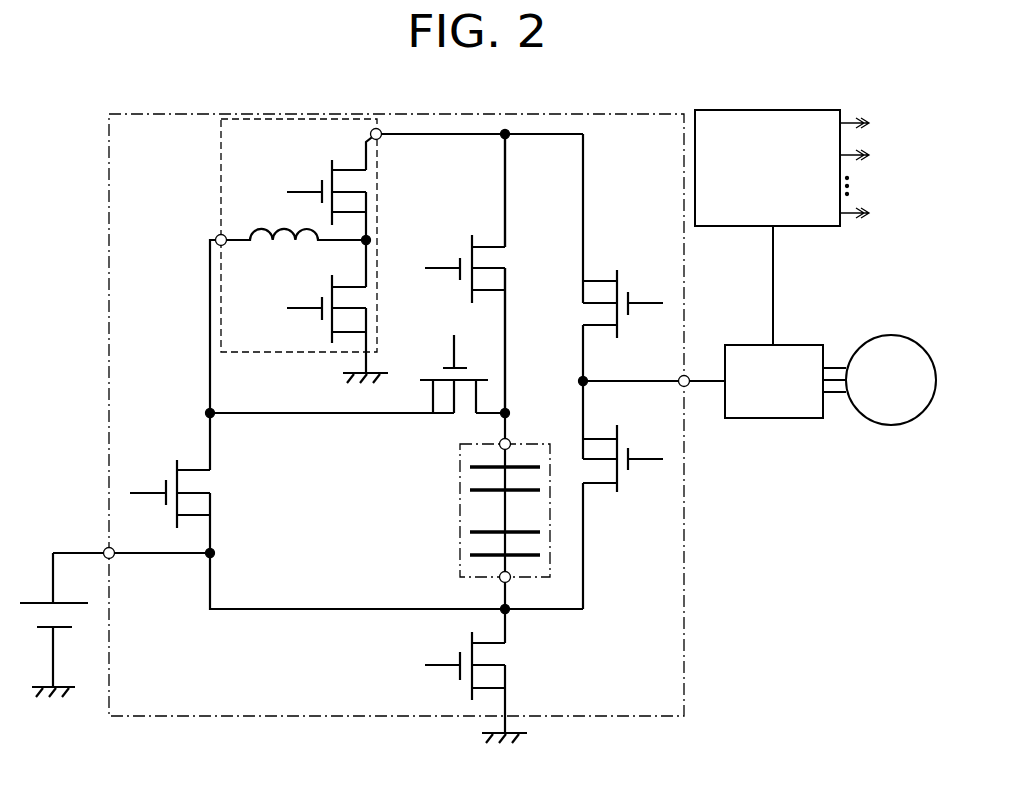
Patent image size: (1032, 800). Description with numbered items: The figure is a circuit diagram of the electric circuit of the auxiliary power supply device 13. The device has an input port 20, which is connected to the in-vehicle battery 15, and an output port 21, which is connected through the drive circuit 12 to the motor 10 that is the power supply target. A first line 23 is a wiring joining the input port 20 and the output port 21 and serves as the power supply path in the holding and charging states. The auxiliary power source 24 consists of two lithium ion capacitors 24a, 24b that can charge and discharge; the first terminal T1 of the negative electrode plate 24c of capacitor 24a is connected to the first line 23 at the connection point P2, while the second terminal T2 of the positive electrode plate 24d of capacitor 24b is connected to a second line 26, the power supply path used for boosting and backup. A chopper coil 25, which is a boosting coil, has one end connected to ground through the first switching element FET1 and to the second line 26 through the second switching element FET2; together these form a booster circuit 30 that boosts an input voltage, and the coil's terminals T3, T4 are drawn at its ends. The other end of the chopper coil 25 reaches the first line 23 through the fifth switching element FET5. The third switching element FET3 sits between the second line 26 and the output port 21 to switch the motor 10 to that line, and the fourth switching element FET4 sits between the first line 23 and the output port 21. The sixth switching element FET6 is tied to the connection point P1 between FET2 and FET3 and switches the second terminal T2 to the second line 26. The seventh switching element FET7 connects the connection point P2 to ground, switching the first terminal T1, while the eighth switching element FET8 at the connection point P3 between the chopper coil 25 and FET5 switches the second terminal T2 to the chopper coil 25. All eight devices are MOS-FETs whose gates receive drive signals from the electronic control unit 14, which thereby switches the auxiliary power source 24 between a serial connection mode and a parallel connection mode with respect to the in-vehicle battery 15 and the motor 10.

The motor 10 is at (885, 336).
The drive circuit 12 is at (800, 343).
The auxiliary power supply device 13 is at (684, 637).
The electronic control unit 14 is at (798, 228).
The in-vehicle battery 15 is at (40, 600).
The input port 20 is at (106, 548).
The output port 21 is at (687, 377).
The first line 23 is at (300, 607).
The auxiliary power source 24 is at (464, 512).
The capacitor 24a is at (461, 547).
The capacitor 24b is at (461, 484).
The negative electrode plate 24c is at (487, 556).
The positive electrode plate 24d is at (487, 467).
The chopper coil 25 is at (294, 234).
The second line 26 is at (480, 136).
The booster circuit 30 is at (221, 142).
The first terminal T1 is at (500, 582).
The second terminal T2 is at (500, 442).
The terminal T3 is at (216, 237).
The terminal T4 is at (381, 140).
The connection point P1 is at (509, 137).
The connection point P2 is at (508, 612).
The connection point P3 is at (213, 416).
The first switching element FET1 is at (332, 275).
The second switching element FET2 is at (332, 158).
The third switching element FET3 is at (617, 272).
The fourth switching element FET4 is at (619, 494).
The fifth switching element FET5 is at (177, 472).
The sixth switching element FET6 is at (472, 238).
The seventh switching element FET7 is at (470, 696).
The eighth switching element FET8 is at (430, 378).